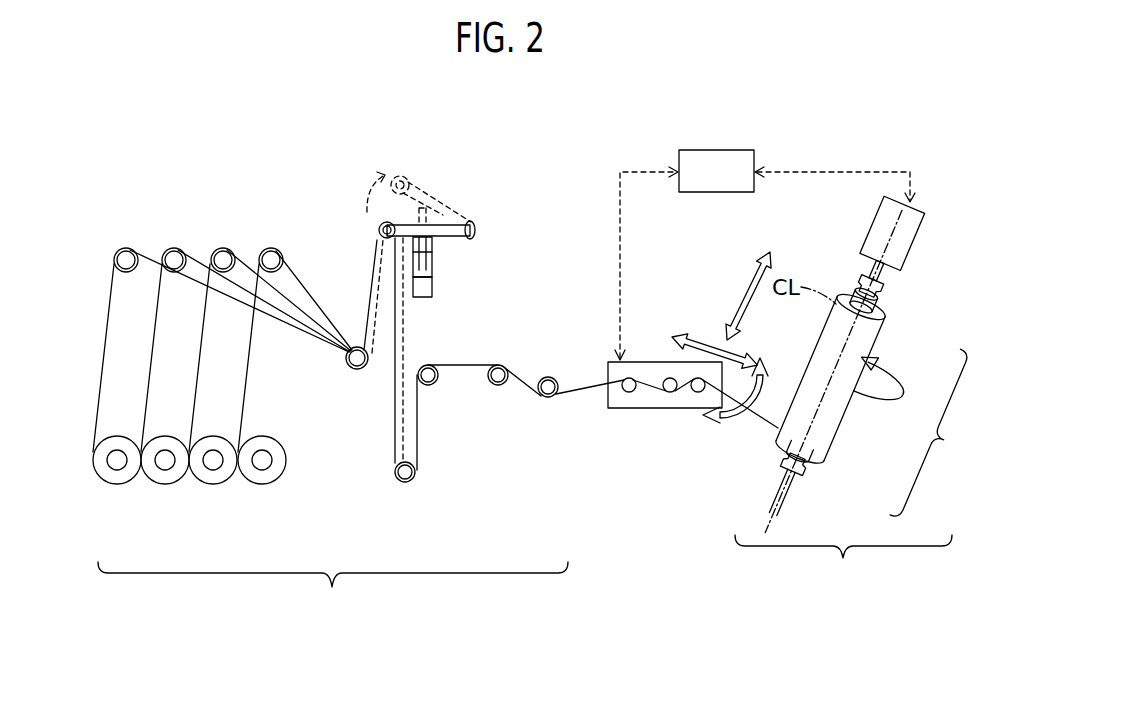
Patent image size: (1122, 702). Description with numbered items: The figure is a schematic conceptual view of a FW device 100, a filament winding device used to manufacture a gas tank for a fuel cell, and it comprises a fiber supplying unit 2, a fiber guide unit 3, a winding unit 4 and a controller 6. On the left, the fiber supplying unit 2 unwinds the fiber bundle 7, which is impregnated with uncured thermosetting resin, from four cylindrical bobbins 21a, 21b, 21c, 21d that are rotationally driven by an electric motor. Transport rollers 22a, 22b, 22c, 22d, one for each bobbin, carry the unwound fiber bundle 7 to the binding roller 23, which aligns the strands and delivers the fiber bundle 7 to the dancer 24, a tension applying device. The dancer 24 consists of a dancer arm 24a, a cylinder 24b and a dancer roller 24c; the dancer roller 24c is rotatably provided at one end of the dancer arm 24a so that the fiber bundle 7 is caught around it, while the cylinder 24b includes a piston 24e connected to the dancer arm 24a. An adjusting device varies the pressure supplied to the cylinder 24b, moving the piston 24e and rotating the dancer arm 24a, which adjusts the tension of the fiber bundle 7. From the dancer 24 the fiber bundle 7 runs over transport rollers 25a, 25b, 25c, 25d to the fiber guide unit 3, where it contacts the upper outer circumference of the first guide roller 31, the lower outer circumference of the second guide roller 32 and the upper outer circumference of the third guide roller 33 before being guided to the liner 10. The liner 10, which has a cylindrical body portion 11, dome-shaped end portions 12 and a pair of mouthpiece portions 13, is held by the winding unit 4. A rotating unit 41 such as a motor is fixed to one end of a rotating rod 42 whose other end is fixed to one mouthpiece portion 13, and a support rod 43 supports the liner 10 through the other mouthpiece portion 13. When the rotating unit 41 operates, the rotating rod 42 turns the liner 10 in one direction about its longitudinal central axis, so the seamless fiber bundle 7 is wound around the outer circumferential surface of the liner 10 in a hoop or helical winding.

The FW device 100 is at (828, 153).
The fiber supplying unit 2 is at (333, 593).
The fiber guide unit 3 is at (636, 336).
The winding unit 4 is at (843, 564).
The controller 6 is at (715, 168).
The fiber bundle 7 is at (110, 340).
The liner 10 is at (935, 436).
The cylindrical body portion 11 is at (842, 427).
The end portion 12 is at (840, 296).
The mouthpiece portion 13 is at (878, 297).
The bobbin 21a is at (107, 484).
The bobbin 21b is at (155, 484).
The bobbin 21c is at (203, 484).
The bobbin 21d is at (252, 484).
The transport roller 22a is at (120, 250).
The transport roller 22b is at (168, 250).
The transport roller 22c is at (217, 250).
The transport roller 22d is at (265, 250).
The binding roller 23 is at (357, 370).
The dancer 24 is at (474, 177).
The dancer arm 24a is at (437, 227).
The cylinder 24b is at (433, 260).
The dancer roller 24c is at (379, 229).
The piston 24e is at (428, 287).
The transport roller 25a is at (415, 472).
The transport roller 25b is at (428, 385).
The transport roller 25c is at (498, 385).
The transport roller 25d is at (548, 397).
The first guide roller 31 is at (629, 392).
The second guide roller 32 is at (670, 392).
The third guide roller 33 is at (698, 392).
The rotating unit 41 is at (907, 250).
The rotating rod 42 is at (880, 280).
The support rod 43 is at (777, 503).